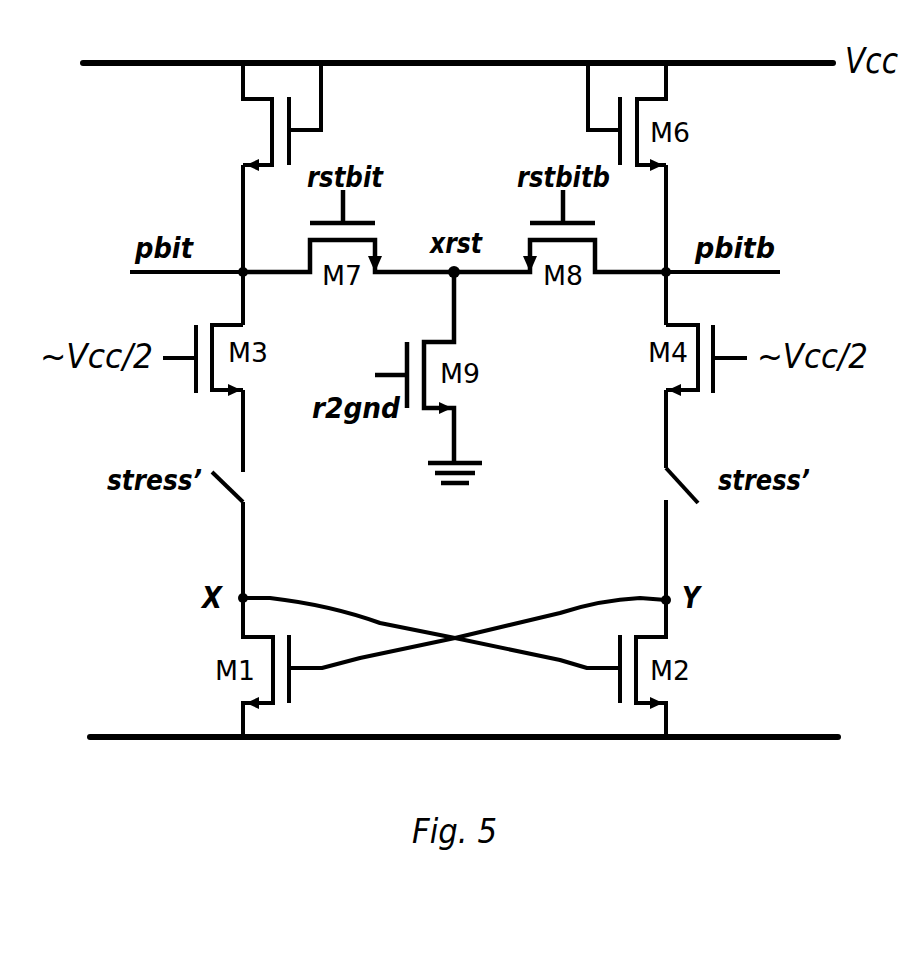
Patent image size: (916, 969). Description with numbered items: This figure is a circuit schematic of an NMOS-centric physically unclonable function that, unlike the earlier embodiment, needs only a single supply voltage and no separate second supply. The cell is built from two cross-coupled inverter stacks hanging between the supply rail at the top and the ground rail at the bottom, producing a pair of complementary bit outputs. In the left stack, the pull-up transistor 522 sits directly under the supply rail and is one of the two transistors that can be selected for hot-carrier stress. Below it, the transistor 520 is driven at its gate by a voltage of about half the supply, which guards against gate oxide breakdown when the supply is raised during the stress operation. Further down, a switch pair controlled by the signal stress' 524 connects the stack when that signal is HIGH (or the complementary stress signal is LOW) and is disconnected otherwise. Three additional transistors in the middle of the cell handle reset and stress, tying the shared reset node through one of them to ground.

The M3 520 is at (219, 298).
The M5 522 is at (239, 116).
The stress' 524 is at (260, 494).